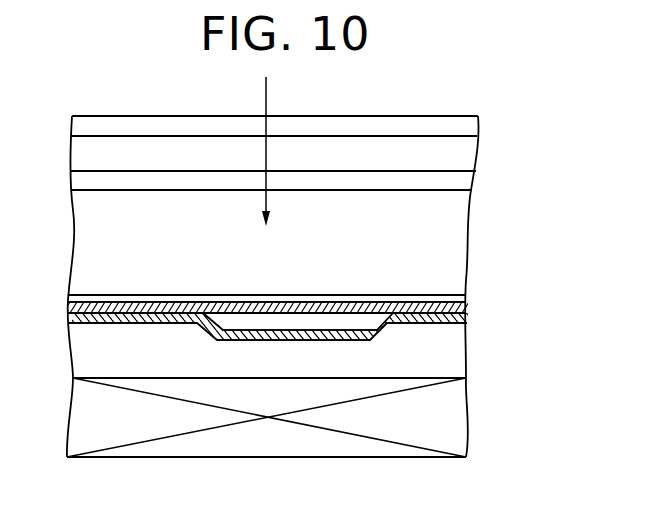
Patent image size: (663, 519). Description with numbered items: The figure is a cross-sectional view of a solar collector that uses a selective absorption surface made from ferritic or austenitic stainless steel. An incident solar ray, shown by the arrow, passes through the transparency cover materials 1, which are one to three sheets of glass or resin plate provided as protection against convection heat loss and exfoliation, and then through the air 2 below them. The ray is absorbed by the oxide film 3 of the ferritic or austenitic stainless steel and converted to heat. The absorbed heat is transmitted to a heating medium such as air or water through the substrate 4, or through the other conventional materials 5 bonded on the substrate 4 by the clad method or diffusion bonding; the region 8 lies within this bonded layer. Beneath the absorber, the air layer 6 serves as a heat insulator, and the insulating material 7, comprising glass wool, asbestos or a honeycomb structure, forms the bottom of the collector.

The transparency cover materials 1 is at (491, 104).
The air 2 is at (430, 229).
The oxide film 3 is at (468, 298).
The substrate 4 is at (468, 307).
The conventional materials 5 is at (469, 318).
The air layer 6 is at (457, 358).
The insulating material 7 is at (452, 412).
The recess 8 is at (250, 325).